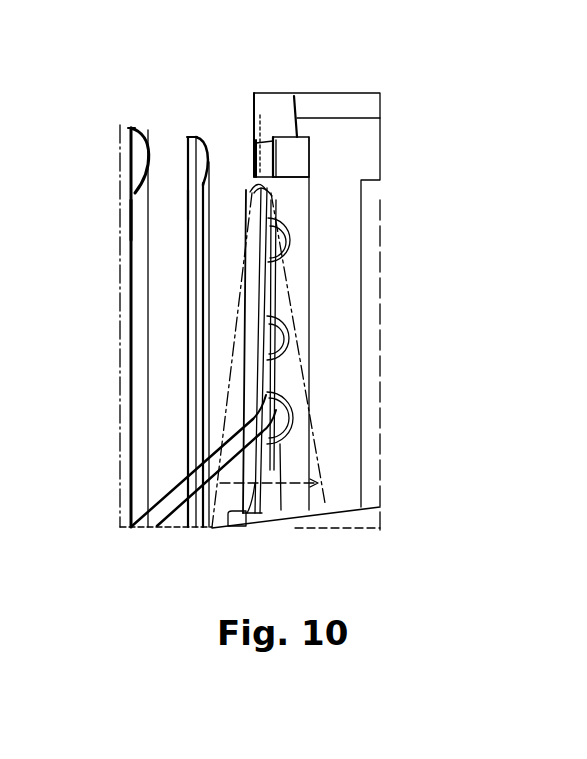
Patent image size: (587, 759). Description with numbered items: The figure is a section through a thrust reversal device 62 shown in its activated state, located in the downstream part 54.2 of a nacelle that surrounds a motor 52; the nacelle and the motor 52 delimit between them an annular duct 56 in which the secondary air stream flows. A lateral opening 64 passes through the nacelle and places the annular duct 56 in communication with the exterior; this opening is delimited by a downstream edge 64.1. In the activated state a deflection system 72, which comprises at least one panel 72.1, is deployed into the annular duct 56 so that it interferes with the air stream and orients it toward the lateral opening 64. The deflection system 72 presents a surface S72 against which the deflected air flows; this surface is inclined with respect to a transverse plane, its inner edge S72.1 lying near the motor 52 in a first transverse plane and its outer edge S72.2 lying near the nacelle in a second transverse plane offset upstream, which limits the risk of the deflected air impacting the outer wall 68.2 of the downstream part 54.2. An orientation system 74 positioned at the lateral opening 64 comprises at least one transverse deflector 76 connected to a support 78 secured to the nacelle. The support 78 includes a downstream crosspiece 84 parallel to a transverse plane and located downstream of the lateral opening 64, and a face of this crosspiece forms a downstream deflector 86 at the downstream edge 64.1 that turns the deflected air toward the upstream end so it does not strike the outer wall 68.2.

The motor 52 is at (367, 518).
The downstream part 54.2 is at (340, 112).
The annular duct 56 is at (93, 326).
The thrust reversal device 62 is at (108, 118).
The lateral opening 64 is at (173, 311).
The downstream edge 64.1 is at (258, 167).
The outer wall 68.2 is at (307, 105).
The deflection system 72 is at (248, 388).
The panel 72.1 is at (270, 340).
The orientation system 74 is at (108, 175).
The transverse deflector 76 is at (185, 203).
The support 78 is at (311, 147).
The downstream crosspiece 84 is at (303, 162).
The downstream deflector 86 is at (256, 157).
The surface S72 is at (243, 330).
The inner edge S72.1 is at (227, 527).
The outer edge S72.2 is at (251, 192).